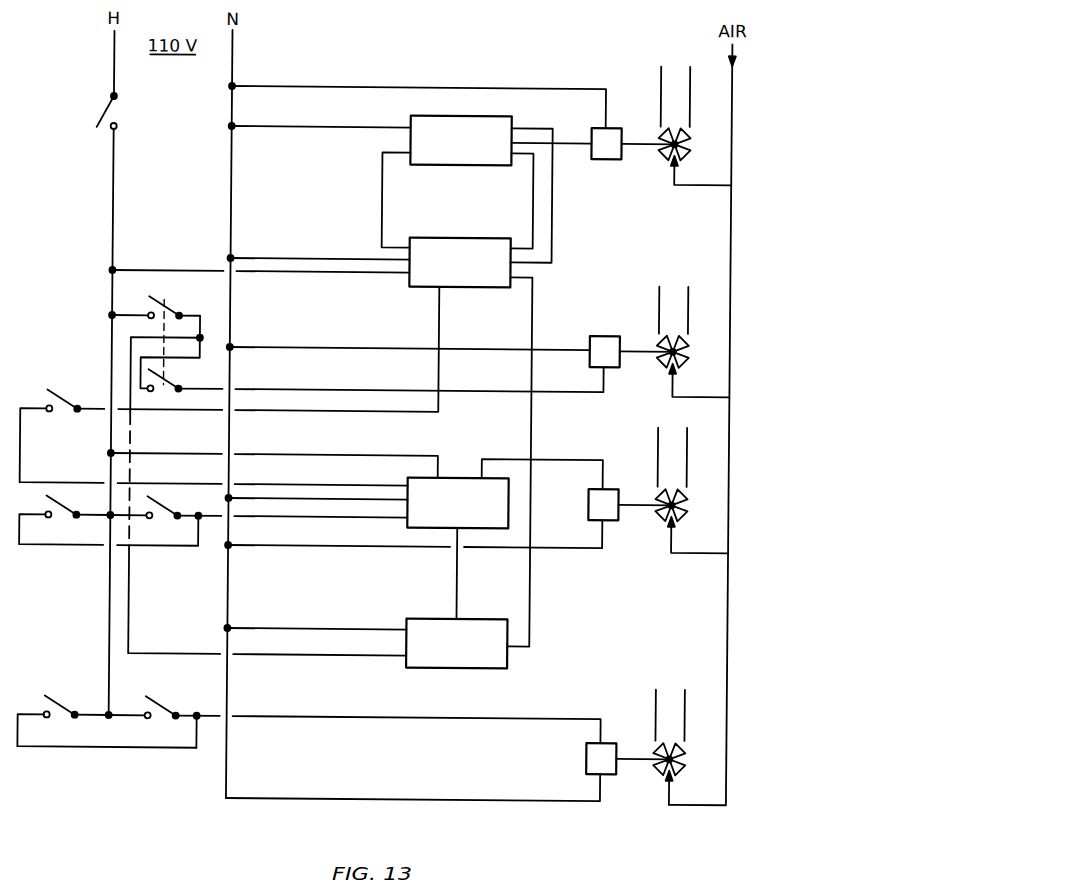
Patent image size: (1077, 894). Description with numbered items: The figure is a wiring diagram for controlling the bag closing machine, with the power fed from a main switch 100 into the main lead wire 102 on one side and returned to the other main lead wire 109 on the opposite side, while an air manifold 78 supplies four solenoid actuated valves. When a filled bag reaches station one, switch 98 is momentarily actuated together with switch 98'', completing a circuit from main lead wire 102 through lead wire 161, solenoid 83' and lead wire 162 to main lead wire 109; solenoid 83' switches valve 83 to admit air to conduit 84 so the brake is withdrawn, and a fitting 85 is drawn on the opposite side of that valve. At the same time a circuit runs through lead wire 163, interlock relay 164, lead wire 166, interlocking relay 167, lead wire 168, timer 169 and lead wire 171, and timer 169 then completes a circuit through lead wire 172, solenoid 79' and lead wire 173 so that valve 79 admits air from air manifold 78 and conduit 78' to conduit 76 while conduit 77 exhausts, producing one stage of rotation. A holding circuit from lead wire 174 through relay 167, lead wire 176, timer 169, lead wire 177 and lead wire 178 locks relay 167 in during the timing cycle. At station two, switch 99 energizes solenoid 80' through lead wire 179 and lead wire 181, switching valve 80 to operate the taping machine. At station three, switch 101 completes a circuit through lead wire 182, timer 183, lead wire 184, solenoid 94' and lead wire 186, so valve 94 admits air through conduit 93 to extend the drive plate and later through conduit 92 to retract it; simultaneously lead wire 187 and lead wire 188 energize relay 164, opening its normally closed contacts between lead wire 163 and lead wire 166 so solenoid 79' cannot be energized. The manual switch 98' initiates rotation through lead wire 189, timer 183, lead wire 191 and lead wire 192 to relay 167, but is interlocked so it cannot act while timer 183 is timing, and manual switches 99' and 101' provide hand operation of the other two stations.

The main switch 100 is at (106, 108).
The main lead wire 102 is at (112, 177).
The main lead wire 109 is at (234, 187).
The switch 98 is at (162, 335).
The manual switch 98' is at (121, 428).
The switch 98'' is at (181, 364).
The lead wire 163 is at (135, 438).
The switch 101 is at (164, 515).
The manual switch 101' is at (65, 514).
The switch 99 is at (162, 715).
The manual switch 99' is at (107, 715).
The lead wire 173 is at (430, 85).
The lead wire 171 is at (336, 125).
The timer 169 is at (458, 165).
The lead wire 168 is at (384, 214).
The lead wire 176 is at (533, 212).
The lead wire 177 is at (555, 212).
The lead wire 172 is at (578, 143).
The lead wire 178 is at (306, 258).
The lead wire 174 is at (374, 274).
The interlocking relay 167 is at (470, 286).
The lead wire 166 is at (535, 312).
The lead wire 162 is at (314, 347).
The lead wire 161 is at (312, 389).
The lead wire 192 is at (388, 413).
The lead wire 189 is at (312, 454).
The lead wire 191 is at (314, 484).
The lead wire 182 is at (318, 517).
The timer 183 is at (411, 526).
The lead wire 184 is at (560, 457).
The lead wire 186 is at (413, 544).
The lead wire 187 is at (463, 586).
The lead wire 188 is at (322, 628).
The interlock relay 164 is at (466, 668).
The lead wire 179 is at (322, 716).
The lead wire 181 is at (380, 798).
The fluid conduit 76 is at (660, 96).
The fluid conduit 77 is at (691, 100).
The air manifold 78 is at (720, 425).
The conduit 78' is at (701, 184).
The solenoid actuated four-way valve 79 is at (673, 141).
The solenoid 79' is at (626, 156).
The air line 85 is at (660, 304).
The conduit 84 is at (691, 307).
The solenoid actuated valve 83 is at (674, 366).
The solenoid 83' is at (623, 362).
The conduit 92 is at (660, 453).
The conduit 93 is at (691, 456).
The solenoid actuated four-way valve 94 is at (673, 521).
The solenoid 94' is at (621, 519).
The four-way valve 80 is at (670, 747).
The solenoid 80' is at (616, 770).